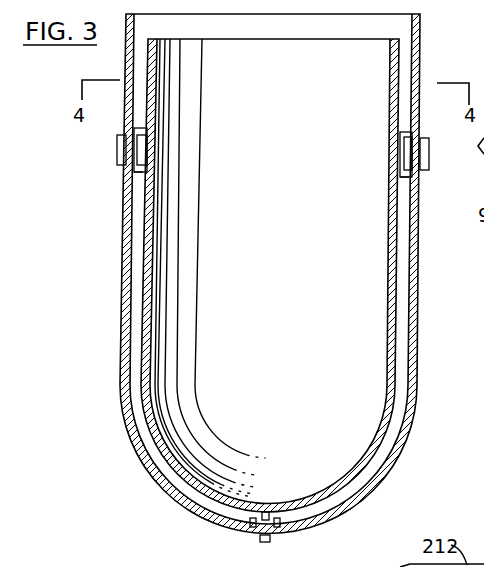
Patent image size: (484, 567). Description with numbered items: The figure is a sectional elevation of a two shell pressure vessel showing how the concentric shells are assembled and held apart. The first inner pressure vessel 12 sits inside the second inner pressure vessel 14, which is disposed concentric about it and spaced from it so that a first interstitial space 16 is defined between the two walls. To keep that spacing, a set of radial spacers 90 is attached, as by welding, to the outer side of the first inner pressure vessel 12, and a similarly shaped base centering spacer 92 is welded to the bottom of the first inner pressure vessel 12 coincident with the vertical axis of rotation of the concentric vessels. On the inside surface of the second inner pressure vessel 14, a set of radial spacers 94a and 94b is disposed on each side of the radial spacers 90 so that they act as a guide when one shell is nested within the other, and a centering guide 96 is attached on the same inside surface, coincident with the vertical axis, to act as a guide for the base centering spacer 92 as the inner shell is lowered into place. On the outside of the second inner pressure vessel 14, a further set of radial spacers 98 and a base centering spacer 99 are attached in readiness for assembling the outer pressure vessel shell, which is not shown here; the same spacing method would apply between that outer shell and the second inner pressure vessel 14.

The first inner pressure vessel 12 is at (389, 272).
The second inner pressure vessel 14 is at (417, 270).
The first interstitial space 16 is at (403, 310).
The radial spacers 90 is at (141, 150).
The base centering spacer 92 is at (266, 512).
The radial spacer 94a is at (405, 177).
The radial spacer 94b is at (140, 171).
The centering guide 96 is at (282, 527).
The radial spacers 98 is at (117, 146).
The base centering spacer 99 is at (262, 542).